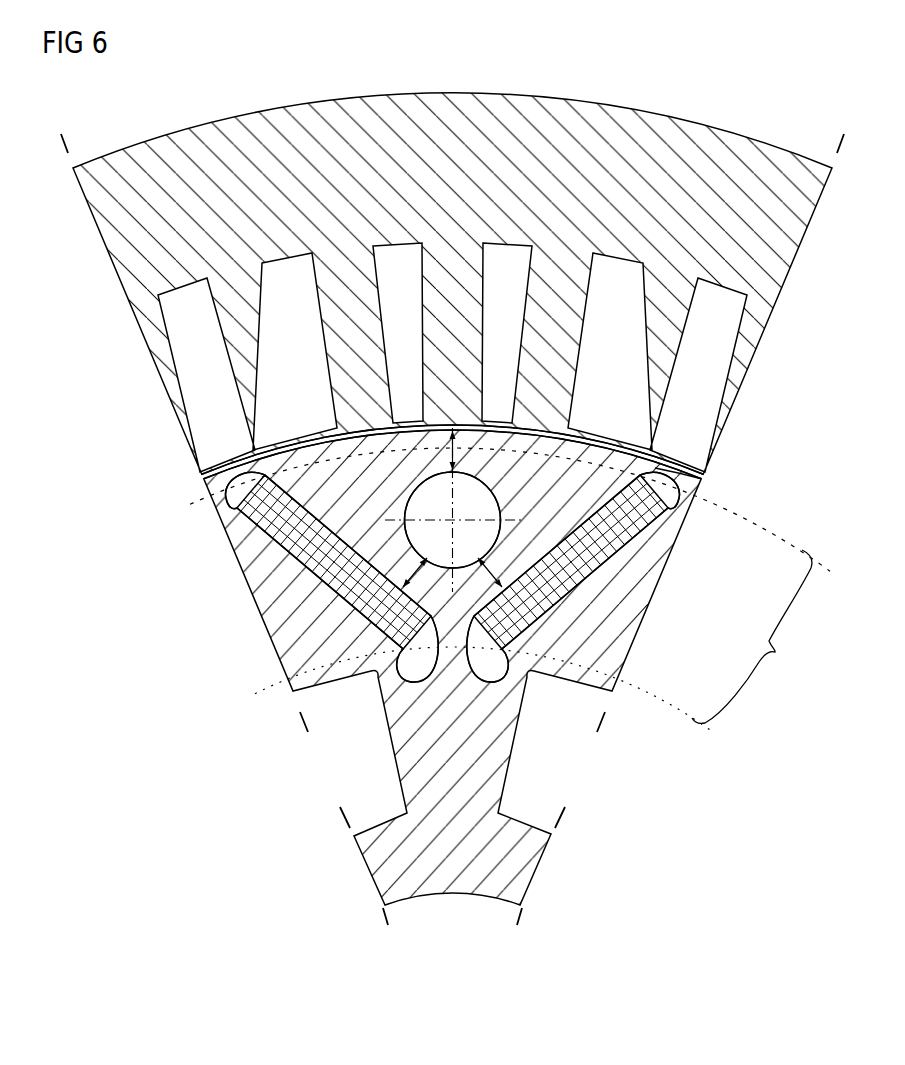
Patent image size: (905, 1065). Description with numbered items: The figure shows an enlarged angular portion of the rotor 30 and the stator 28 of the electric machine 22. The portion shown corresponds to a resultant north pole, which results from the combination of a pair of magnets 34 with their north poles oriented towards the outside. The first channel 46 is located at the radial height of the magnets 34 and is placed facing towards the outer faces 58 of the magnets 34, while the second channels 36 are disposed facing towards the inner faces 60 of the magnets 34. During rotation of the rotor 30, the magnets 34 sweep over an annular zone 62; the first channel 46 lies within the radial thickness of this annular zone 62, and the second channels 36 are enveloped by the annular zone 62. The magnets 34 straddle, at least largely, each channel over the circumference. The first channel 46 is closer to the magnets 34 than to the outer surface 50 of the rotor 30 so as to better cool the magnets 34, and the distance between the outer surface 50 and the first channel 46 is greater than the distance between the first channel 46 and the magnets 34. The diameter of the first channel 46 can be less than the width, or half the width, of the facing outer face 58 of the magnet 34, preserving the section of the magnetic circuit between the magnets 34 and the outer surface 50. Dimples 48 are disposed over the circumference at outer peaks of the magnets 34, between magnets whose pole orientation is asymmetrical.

The electric machine 22 is at (731, 99).
The stator 28 is at (207, 133).
The rotor 30 is at (435, 865).
The magnets 34 is at (587, 590).
The second channels 36 is at (562, 767).
The first channel 46 is at (445, 513).
The dimples 48 is at (697, 467).
The outer surface of the rotor 50 is at (653, 470).
The outer faces of the magnets 58 is at (550, 618).
The inner faces of the magnets 60 is at (630, 543).
The annular zone 62 is at (510, 591).